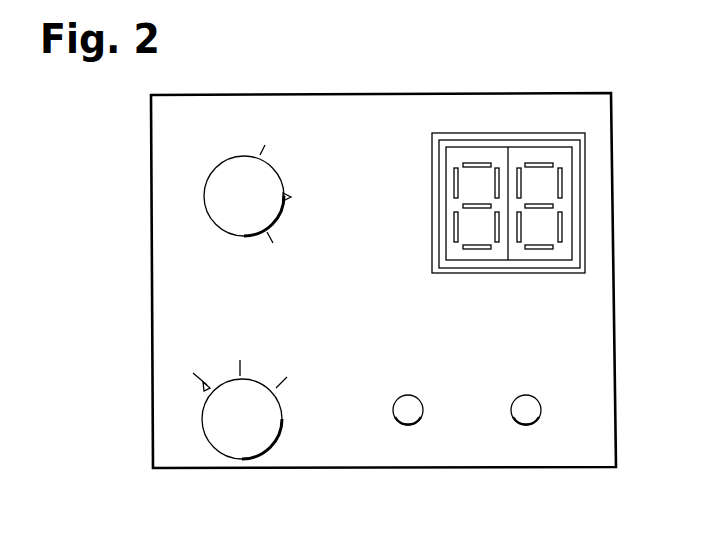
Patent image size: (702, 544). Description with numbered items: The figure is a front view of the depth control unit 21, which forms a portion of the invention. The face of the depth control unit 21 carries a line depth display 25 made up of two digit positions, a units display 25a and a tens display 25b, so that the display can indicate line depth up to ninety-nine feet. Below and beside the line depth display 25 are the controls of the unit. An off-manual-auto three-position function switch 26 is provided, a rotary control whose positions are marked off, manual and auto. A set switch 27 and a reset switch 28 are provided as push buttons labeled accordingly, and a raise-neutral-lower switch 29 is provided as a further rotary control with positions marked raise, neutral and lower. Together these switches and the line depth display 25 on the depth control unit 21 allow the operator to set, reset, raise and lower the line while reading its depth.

The depth control unit 21 is at (150, 252).
The line depth display 25 is at (518, 163).
The units display 25a is at (572, 180).
The tens display 25b is at (448, 170).
The off-manual-auto three-position function switch 26 is at (243, 447).
The set switch 27 is at (410, 425).
The reset switch 28 is at (525, 425).
The raise-neutral-lower switch 29 is at (222, 172).